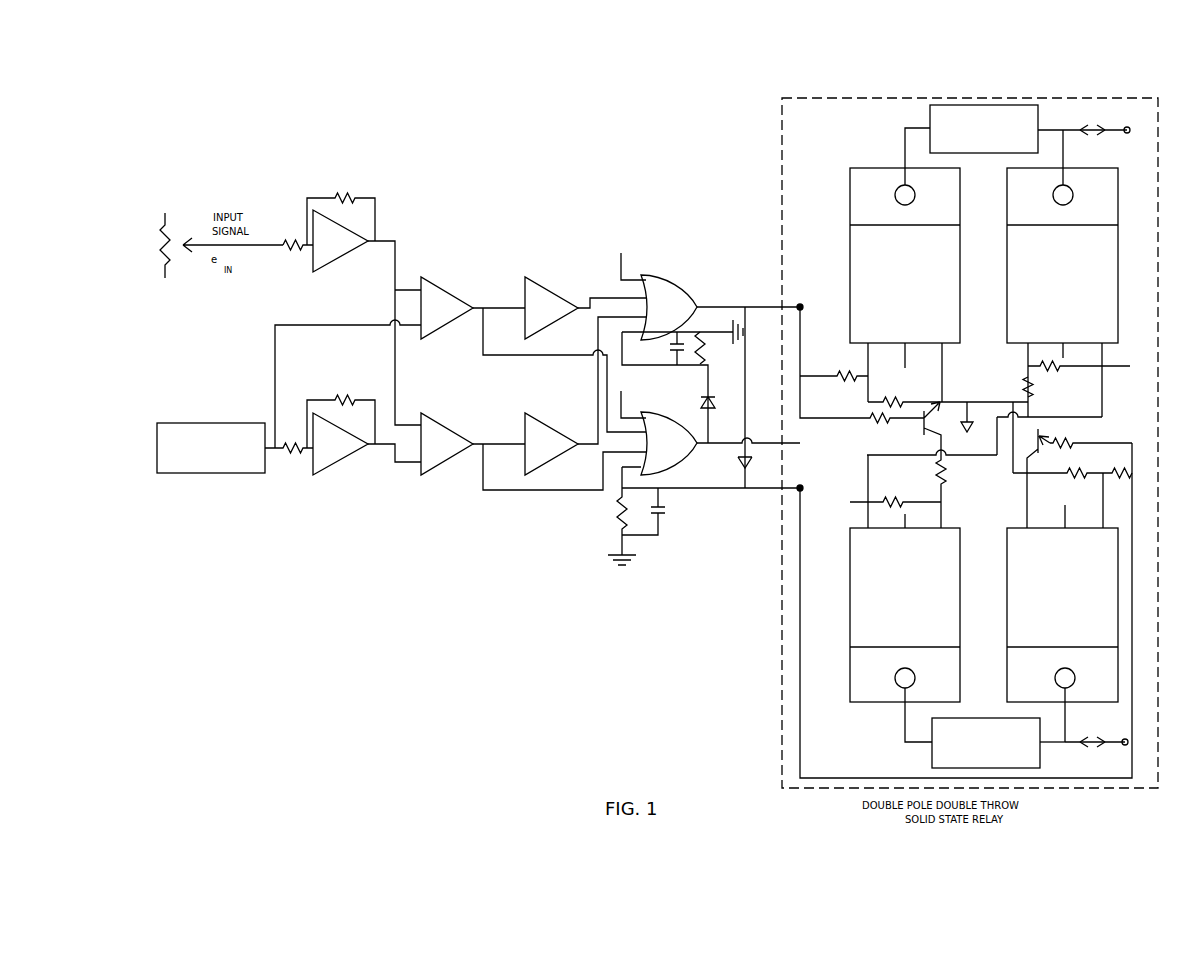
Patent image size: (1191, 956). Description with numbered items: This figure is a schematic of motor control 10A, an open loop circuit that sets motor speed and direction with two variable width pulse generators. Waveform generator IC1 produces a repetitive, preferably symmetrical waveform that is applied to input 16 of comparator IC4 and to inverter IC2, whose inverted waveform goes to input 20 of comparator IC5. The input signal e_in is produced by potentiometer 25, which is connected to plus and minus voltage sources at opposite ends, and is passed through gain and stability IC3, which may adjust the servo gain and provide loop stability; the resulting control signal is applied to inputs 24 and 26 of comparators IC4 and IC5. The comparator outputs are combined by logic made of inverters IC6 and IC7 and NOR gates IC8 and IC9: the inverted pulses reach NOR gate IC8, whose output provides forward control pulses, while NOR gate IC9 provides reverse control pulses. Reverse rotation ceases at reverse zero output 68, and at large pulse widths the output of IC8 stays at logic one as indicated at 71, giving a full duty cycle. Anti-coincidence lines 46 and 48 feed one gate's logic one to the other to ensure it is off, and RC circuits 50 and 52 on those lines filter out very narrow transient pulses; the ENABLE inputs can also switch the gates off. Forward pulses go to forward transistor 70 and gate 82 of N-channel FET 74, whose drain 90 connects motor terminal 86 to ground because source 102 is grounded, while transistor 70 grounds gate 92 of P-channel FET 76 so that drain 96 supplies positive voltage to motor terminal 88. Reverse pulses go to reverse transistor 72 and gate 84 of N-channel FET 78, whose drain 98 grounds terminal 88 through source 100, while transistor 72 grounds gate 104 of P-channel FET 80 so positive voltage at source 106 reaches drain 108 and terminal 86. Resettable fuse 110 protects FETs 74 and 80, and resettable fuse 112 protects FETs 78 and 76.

The motor control 10A is at (209, 122).
The potentiometer 25 is at (175, 233).
The waveform generator IC1 is at (183, 423).
The inverter IC2 is at (330, 473).
The gain and stability IC IC3 is at (320, 225).
The comparator IC4 is at (436, 292).
The comparator IC5 is at (436, 428).
The inverter IC6 is at (537, 276).
The inverter IC7 is at (537, 412).
The NOR gate IC8 is at (681, 283).
The NOR gate IC9 is at (681, 467).
The input of comparator IC4 24 is at (408, 290).
The input of comparator IC4 16 is at (408, 325).
The input of comparator IC5 26 is at (408, 428).
The input of comparator IC5 20 is at (408, 465).
The anti-coincidence line 46 is at (790, 400).
The anti-coincidence line 48 is at (712, 383).
The RC circuit 50 is at (712, 313).
The RC circuit 52 is at (671, 551).
The reverse zero output 68 is at (803, 487).
The forward transistor 70 is at (920, 424).
The output of NOR gate IC8 at logic one 71 is at (803, 302).
The reverse transistor 72 is at (1042, 432).
The N-channel FET 74 is at (867, 270).
The P-channel FET 76 is at (865, 585).
The N-channel FET 78 is at (1020, 585).
The P-channel FET 80 is at (1017, 270).
The gate of N-channel FET 74 82 is at (865, 360).
The gate of N-channel FET 78 84 is at (1100, 512).
The motor terminal 86 is at (1126, 127).
The motor terminal 88 is at (1123, 748).
The drain of N-channel FET 74 90 is at (860, 177).
The gate of P-channel FET 76 92 is at (942, 512).
The drain of P-channel FET 76 96 is at (865, 685).
The drain of N-channel FET 78 98 is at (1018, 680).
The source of N-channel FET 78 100 is at (1025, 510).
The source of N-channel FET 74 102 is at (942, 380).
The gate of P-channel FET 80 104 is at (1025, 358).
The source of P-channel FET 80 106 is at (1093, 360).
The drain of P-channel FET 80 108 is at (1017, 202).
The resettable fuse 110 is at (930, 125).
The resettable fuse 112 is at (948, 758).